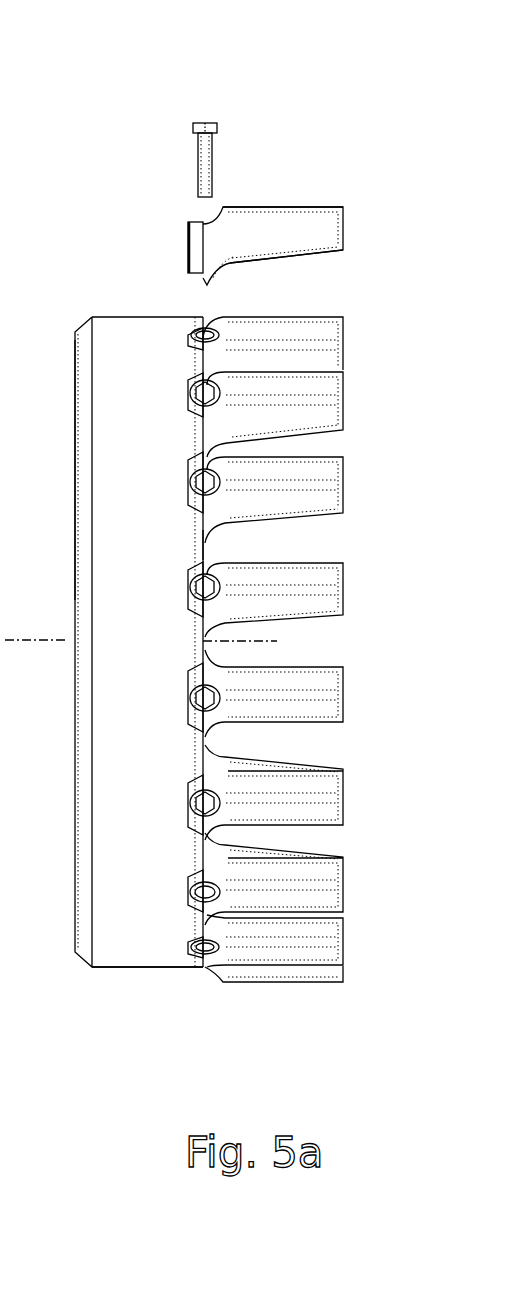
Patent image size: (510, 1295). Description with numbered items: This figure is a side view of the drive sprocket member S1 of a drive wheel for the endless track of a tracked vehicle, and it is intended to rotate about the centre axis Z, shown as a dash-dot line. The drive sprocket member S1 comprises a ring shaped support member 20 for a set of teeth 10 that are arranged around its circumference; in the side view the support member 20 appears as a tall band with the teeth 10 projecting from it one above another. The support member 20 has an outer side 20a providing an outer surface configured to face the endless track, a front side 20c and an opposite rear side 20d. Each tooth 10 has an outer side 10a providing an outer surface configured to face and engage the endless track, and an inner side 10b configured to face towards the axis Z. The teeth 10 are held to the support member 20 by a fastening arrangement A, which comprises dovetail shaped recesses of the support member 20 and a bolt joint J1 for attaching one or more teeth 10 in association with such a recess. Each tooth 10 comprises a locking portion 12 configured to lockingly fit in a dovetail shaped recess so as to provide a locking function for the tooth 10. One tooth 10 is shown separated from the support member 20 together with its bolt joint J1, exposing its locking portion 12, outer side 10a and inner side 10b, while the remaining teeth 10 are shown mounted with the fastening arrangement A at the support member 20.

The drive sprocket member S1 is at (287, 60).
The bolt joint J1 is at (195, 160).
The locking portion 12 is at (180, 247).
The teeth 10 is at (297, 200).
The outer side of teeth 10a is at (243, 207).
The inner side of teeth 10b is at (273, 263).
The support member 20 is at (137, 313).
The outer side of support member 20a is at (157, 968).
The front side of support member 20c is at (205, 543).
The rear side of support member 20d is at (75, 590).
The fastening arrangement A is at (182, 328).
The centre axis Z is at (63, 642).